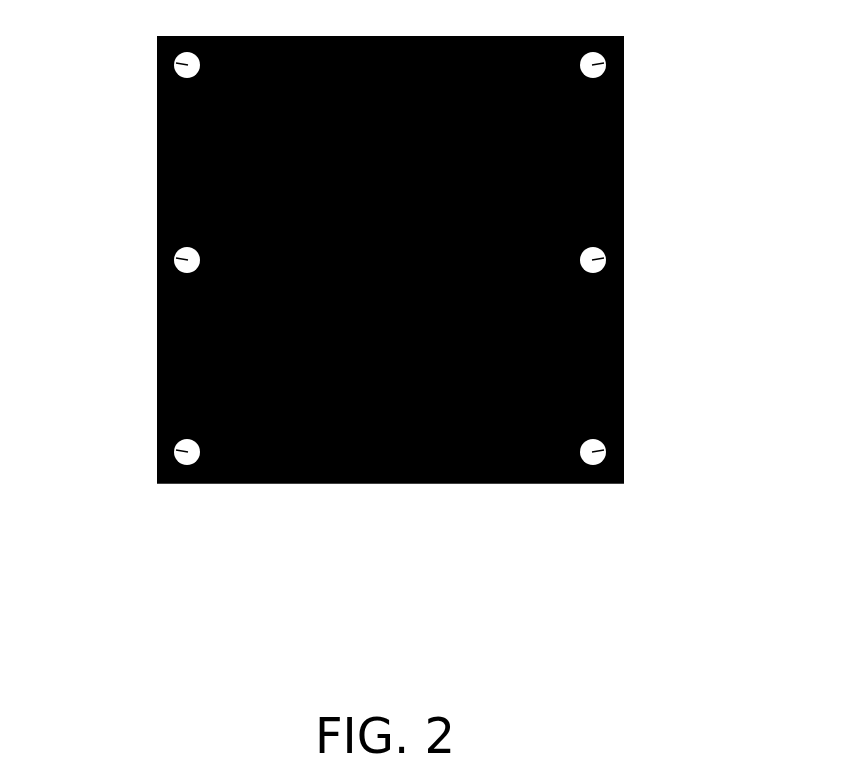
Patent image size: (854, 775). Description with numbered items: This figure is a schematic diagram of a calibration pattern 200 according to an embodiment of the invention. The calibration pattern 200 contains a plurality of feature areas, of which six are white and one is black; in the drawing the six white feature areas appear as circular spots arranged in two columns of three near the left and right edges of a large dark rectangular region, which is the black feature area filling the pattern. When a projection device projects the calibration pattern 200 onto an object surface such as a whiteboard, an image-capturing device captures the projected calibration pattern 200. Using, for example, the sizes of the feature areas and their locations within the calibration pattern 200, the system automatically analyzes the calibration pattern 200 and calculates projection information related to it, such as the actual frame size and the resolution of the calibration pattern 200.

The calibration pattern 200 is at (758, 597).